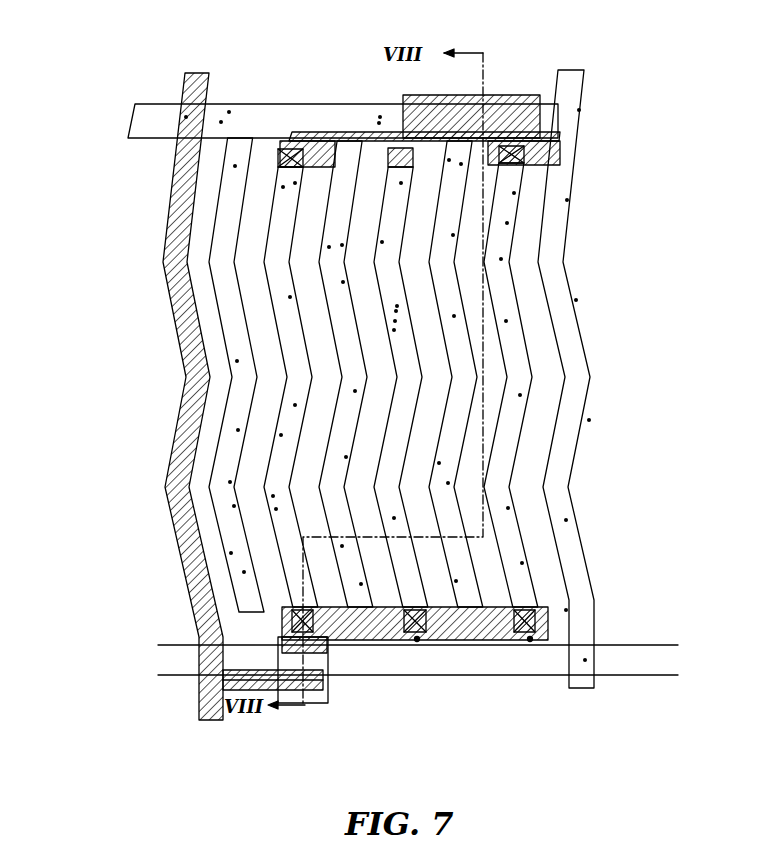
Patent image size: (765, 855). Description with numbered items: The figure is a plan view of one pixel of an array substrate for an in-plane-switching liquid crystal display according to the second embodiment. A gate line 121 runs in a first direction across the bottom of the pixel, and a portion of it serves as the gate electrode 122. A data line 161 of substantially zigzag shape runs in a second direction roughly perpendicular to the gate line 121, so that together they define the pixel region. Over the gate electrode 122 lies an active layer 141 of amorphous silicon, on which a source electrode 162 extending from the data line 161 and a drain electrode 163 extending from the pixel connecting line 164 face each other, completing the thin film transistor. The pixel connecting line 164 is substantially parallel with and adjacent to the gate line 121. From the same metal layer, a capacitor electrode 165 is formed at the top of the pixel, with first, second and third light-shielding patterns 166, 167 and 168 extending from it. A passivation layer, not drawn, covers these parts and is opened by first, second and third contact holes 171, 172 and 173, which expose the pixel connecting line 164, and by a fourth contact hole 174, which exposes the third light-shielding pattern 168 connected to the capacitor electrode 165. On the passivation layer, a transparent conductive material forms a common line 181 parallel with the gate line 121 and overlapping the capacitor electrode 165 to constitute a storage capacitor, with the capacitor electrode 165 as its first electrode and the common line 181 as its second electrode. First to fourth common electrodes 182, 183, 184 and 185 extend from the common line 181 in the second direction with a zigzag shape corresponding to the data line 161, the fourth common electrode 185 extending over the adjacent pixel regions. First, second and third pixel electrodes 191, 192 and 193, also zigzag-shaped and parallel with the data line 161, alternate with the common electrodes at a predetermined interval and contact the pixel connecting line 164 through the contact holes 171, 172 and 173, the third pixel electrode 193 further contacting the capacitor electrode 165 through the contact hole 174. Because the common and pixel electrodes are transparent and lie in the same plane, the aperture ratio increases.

The gate line 121 is at (425, 676).
The gate electrode 122 is at (320, 662).
The active layer 141 is at (332, 658).
The data line 161 is at (167, 214).
The source electrode 162 is at (318, 693).
The drain electrode 163 is at (295, 697).
The pixel connecting line 164 is at (503, 647).
The capacitor electrode 165 is at (510, 95).
The first light-shielding pattern 166 is at (305, 167).
The second light-shielding pattern 167 is at (410, 167).
The third light-shielding pattern 168 is at (548, 165).
The first contact hole 171 is at (284, 622).
The second contact hole 172 is at (417, 640).
The third contact hole 173 is at (533, 645).
The fourth contact hole 174 is at (560, 141).
The common line 181 is at (280, 104).
The first common electrode 182 is at (218, 307).
The second common electrode 183 is at (327, 452).
The third common electrode 184 is at (457, 277).
The fourth common electrode 185 is at (570, 468).
The first pixel electrode 191 is at (285, 398).
The second pixel electrode 192 is at (420, 338).
The third pixel electrode 193 is at (523, 402).